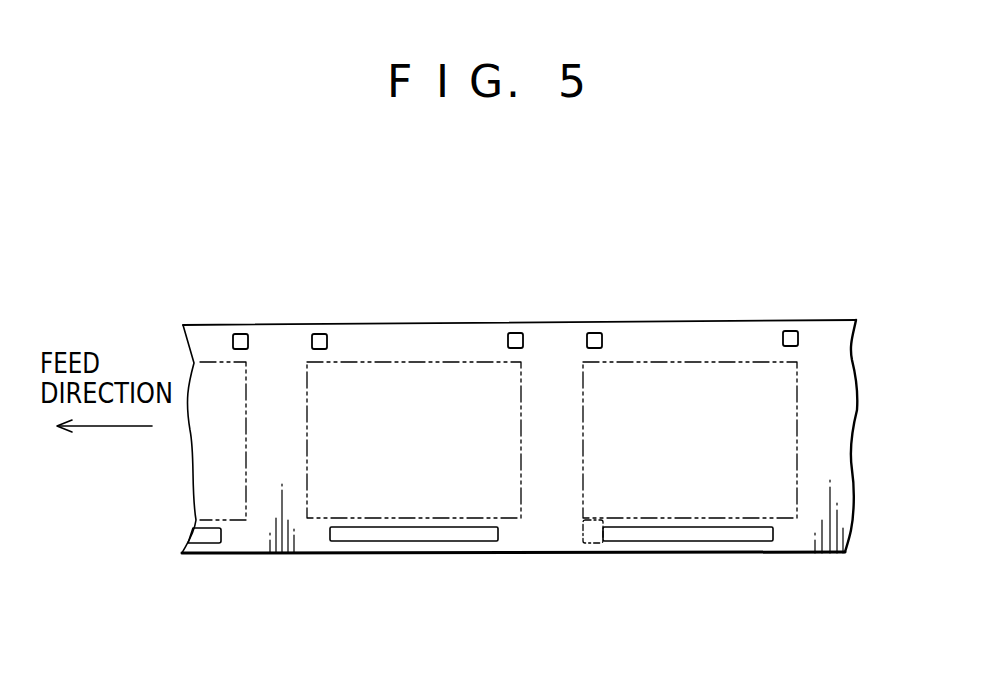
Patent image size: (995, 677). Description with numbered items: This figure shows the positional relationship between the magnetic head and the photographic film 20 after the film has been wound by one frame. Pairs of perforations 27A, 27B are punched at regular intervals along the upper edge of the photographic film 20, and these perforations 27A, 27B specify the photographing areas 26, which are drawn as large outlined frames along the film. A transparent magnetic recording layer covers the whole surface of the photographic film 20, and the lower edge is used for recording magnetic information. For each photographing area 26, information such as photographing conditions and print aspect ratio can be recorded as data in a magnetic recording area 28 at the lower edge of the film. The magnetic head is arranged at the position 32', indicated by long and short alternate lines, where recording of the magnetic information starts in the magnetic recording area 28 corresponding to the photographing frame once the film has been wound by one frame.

The photographic film 20 is at (832, 318).
The photographing area 26 is at (405, 365).
The perforation 27A is at (320, 334).
The perforation 27B is at (237, 334).
The magnetic recording area 28 is at (207, 535).
The magnetic head position 32' is at (593, 585).